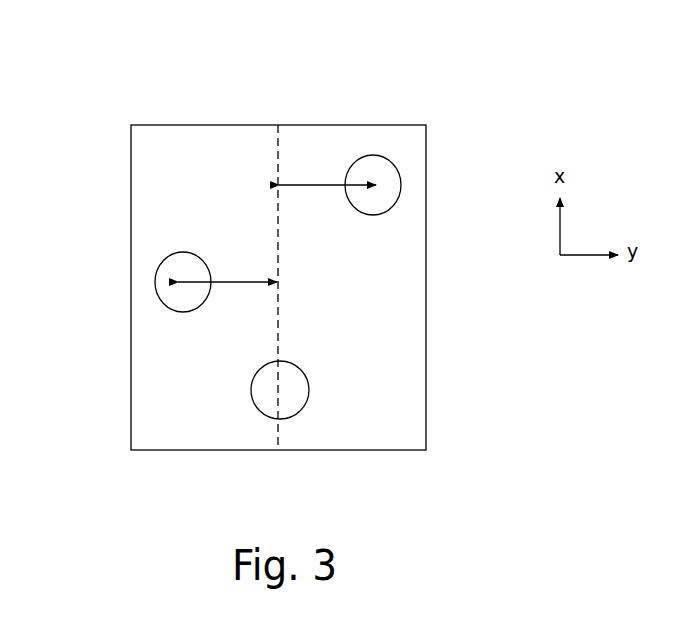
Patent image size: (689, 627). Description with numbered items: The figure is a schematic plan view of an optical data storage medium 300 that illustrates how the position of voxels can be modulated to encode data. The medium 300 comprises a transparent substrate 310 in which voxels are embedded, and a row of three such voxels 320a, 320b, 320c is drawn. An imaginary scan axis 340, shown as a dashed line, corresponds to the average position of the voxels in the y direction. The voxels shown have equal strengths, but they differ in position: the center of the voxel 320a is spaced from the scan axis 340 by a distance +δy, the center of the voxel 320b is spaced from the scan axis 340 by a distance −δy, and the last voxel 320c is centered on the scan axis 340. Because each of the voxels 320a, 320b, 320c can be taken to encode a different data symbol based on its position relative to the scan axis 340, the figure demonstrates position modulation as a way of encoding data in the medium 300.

The optical data storage medium 300 is at (205, 95).
The transparent substrate 310 is at (131, 125).
The voxel 320a is at (360, 160).
The voxel 320b is at (160, 262).
The voxel 320c is at (256, 380).
The scan axis 340 is at (277, 451).